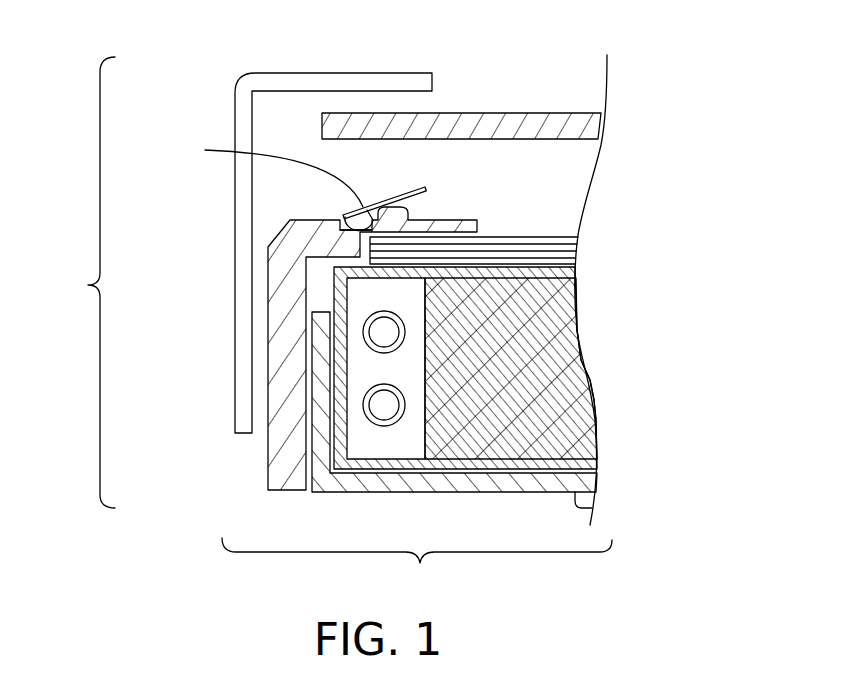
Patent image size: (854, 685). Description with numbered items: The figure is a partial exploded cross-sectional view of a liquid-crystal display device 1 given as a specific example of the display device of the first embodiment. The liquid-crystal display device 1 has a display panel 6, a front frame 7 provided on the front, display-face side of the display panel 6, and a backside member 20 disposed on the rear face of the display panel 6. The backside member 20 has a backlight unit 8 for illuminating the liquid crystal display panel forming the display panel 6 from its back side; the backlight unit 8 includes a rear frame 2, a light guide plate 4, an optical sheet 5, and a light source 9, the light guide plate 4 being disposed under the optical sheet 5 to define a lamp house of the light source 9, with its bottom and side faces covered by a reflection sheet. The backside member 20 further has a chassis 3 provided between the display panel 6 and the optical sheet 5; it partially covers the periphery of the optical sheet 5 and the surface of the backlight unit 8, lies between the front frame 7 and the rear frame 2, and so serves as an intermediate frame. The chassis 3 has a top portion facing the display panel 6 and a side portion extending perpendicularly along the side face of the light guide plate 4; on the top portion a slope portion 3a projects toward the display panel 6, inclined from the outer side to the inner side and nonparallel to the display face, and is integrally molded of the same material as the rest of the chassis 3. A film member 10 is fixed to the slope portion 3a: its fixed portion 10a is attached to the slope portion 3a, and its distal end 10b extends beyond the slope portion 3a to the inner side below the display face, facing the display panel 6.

The liquid-crystal display device 1 is at (90, 282).
The rear frame 2 is at (586, 509).
The chassis 3 is at (268, 292).
The slope portion 3a is at (347, 229).
The light guide plate 4 is at (578, 306).
The optical sheet 5 is at (560, 240).
The display panel 6 is at (548, 113).
The front frame 7 is at (298, 72).
The backlight unit 8 is at (417, 566).
The light source 9 is at (403, 414).
The film member 10 is at (267, 171).
The fixed portion 10a is at (345, 217).
The end 10b is at (425, 187).
The backside member 20 is at (669, 261).